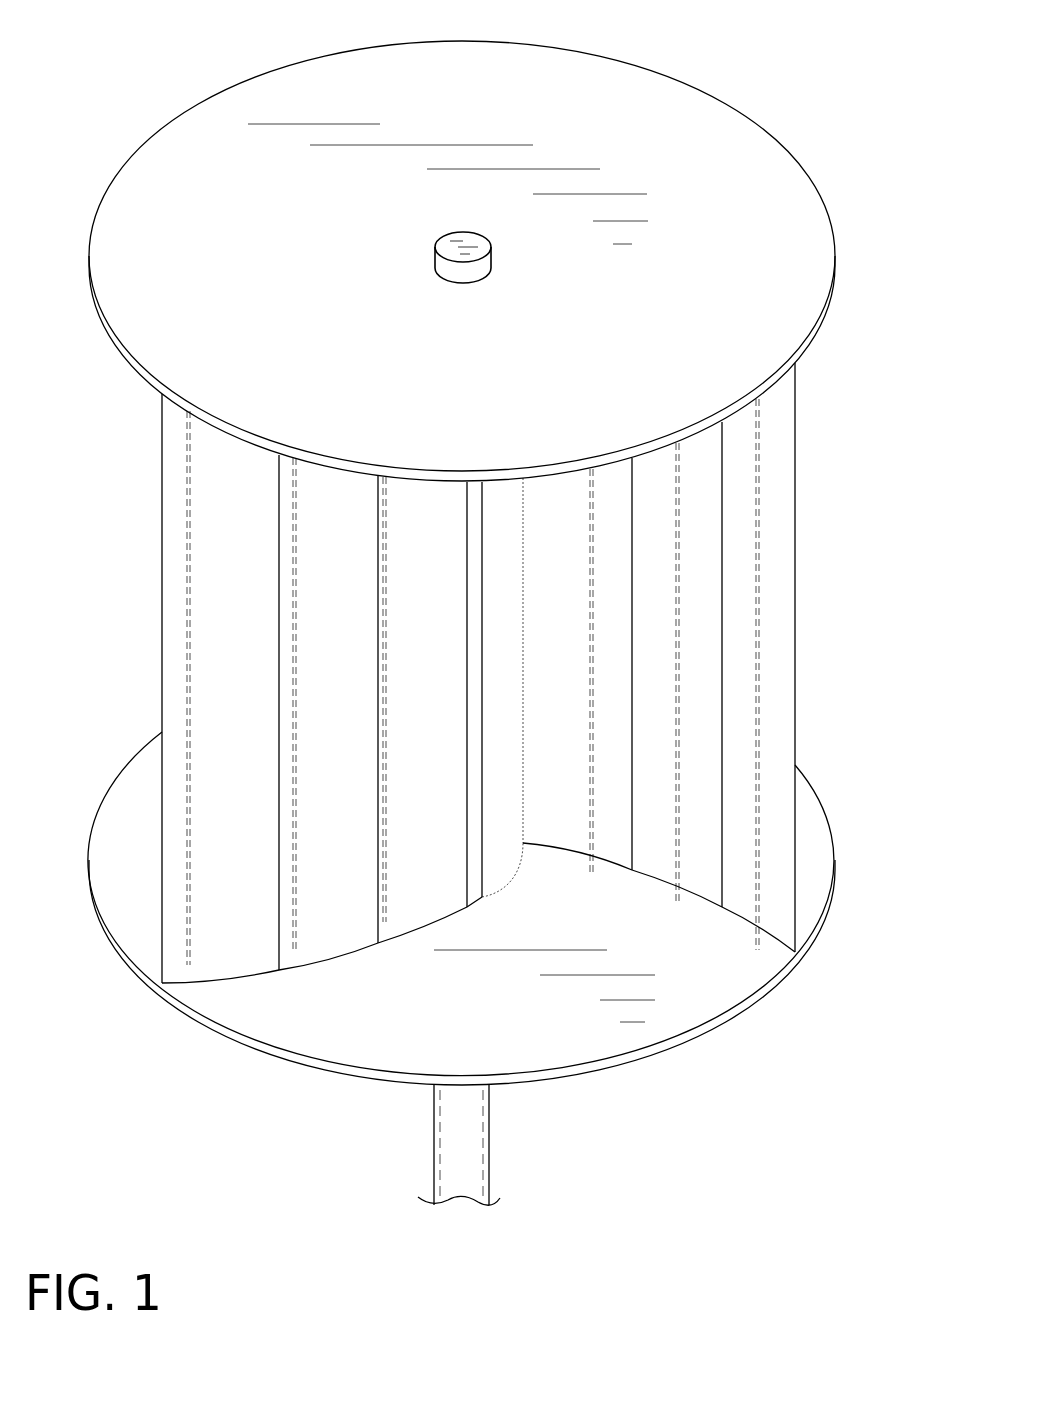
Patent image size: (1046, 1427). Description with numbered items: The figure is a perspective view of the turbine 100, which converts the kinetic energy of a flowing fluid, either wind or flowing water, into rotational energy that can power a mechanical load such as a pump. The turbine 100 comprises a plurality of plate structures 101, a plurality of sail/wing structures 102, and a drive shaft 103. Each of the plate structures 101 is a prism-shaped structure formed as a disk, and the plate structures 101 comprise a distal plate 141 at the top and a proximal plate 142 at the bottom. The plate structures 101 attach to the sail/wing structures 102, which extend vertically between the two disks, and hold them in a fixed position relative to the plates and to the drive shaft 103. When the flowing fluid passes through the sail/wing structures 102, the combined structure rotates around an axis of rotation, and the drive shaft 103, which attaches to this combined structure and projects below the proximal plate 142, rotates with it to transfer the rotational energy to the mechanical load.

The turbine 100 is at (209, 62).
The plurality of plate structures 101 is at (758, 1146).
The plurality of sail/wing structures 102 is at (800, 598).
The drive shaft 103 is at (473, 1157).
The distal plate 141 is at (760, 145).
The proximal plate 142 is at (768, 994).